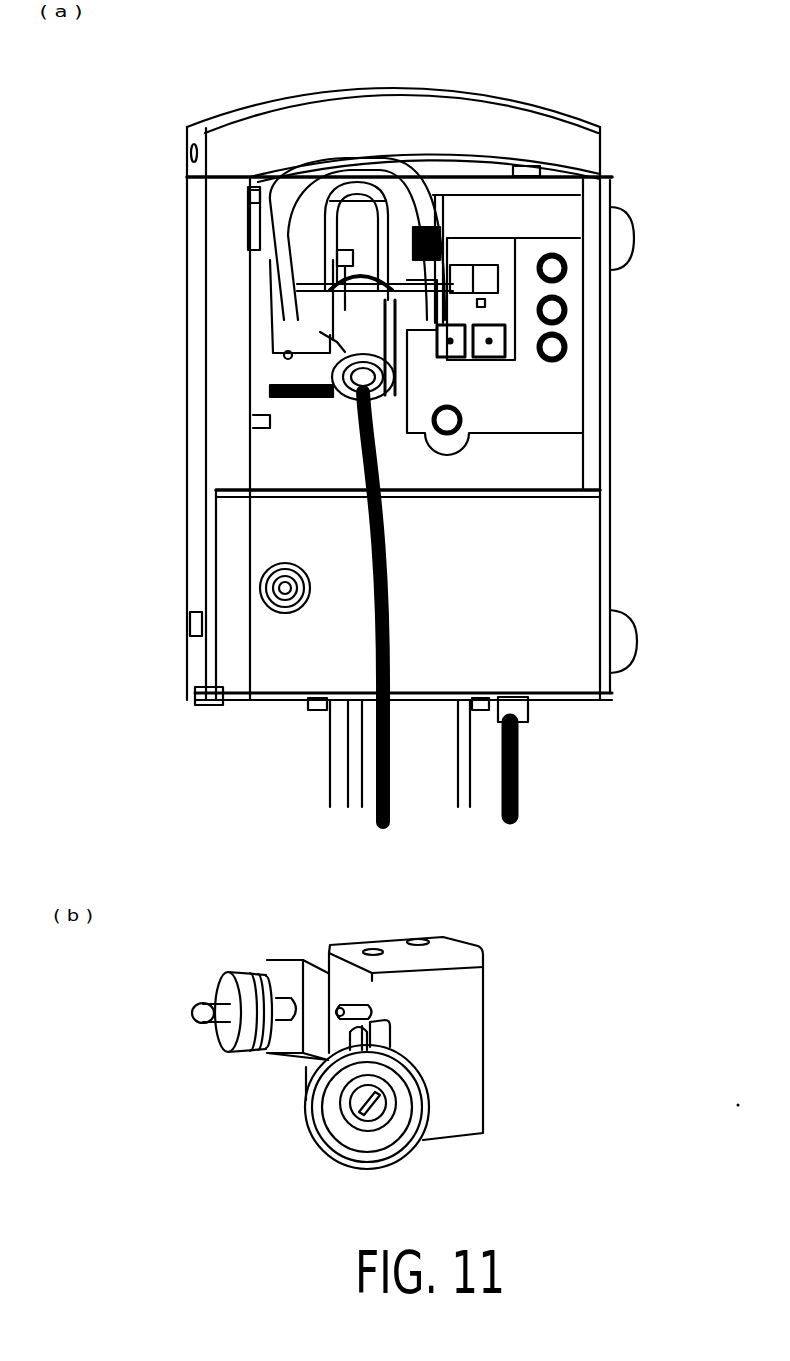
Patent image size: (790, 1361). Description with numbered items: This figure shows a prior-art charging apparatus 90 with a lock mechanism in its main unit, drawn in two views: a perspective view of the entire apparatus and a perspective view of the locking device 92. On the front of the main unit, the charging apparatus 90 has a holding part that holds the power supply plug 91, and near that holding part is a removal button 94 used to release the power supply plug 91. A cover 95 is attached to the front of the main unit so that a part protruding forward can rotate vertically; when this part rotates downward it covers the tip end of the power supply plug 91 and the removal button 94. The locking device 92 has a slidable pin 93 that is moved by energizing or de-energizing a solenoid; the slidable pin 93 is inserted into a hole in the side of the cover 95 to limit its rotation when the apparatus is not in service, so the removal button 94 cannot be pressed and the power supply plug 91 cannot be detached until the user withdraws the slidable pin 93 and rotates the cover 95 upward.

The charging apparatus 90 is at (604, 704).
The power supply plug 91 is at (335, 350).
The locking device 92 is at (483, 1067).
The slidable pin 93 is at (383, 333).
The removal button 94 is at (345, 250).
The cover 95 is at (295, 185).